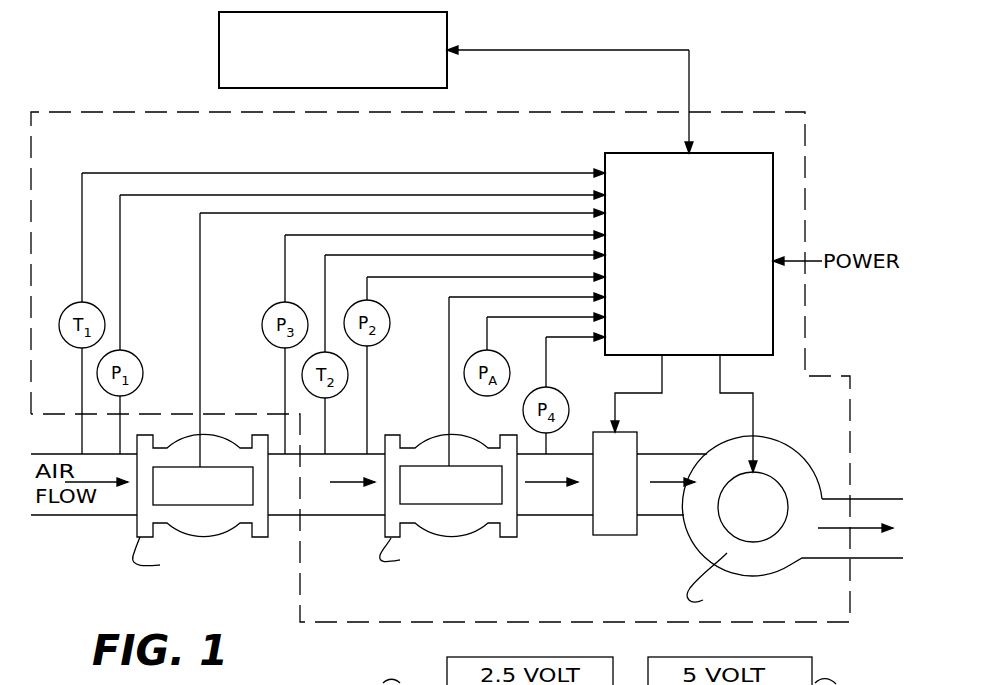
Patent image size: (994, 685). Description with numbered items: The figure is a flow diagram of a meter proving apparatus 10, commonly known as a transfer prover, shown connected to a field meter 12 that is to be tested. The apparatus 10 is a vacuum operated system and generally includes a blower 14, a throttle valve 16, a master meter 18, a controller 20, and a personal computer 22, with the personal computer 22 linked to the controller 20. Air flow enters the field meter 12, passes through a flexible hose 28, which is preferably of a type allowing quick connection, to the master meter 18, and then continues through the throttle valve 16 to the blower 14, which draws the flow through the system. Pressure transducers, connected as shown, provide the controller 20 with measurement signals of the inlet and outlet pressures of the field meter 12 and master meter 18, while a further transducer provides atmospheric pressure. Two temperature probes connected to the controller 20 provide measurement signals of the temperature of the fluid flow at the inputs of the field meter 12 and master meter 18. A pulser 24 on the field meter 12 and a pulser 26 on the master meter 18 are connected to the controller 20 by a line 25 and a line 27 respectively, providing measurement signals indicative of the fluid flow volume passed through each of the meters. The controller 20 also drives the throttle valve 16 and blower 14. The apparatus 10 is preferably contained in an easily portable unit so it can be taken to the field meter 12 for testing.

The apparatus 10 is at (790, 111).
The field meter 12 is at (171, 406).
The blower 14 is at (805, 460).
The throttle valve 16 is at (638, 440).
The master meter 18 is at (448, 444).
The controller 20 is at (700, 219).
The personal computer 22 is at (447, 70).
The pulser 24 is at (233, 438).
The line 25 is at (200, 278).
The pulser 26 is at (468, 466).
The line 27 is at (449, 364).
The flexible hose 28 is at (332, 516).